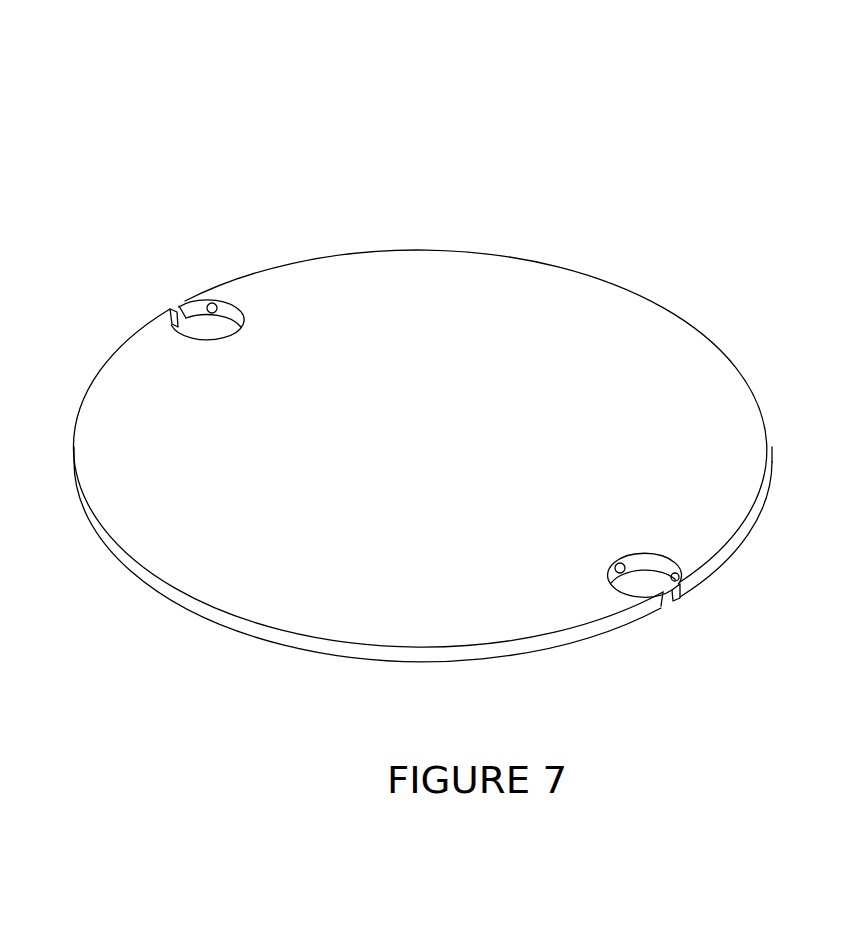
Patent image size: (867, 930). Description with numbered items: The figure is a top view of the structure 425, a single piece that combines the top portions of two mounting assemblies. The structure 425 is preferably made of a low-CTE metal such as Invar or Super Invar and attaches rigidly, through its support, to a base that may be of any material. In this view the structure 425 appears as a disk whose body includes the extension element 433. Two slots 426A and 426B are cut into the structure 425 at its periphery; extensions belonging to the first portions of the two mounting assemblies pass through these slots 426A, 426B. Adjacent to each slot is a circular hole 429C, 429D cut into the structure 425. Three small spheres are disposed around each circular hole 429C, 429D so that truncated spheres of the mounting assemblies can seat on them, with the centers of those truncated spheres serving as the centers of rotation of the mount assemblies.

The structure 425 is at (466, 363).
The slot 426A is at (172, 295).
The slot 426B is at (678, 608).
The circular hole 429C is at (260, 330).
The circular hole 429D is at (595, 547).
The extension element 433 is at (758, 388).